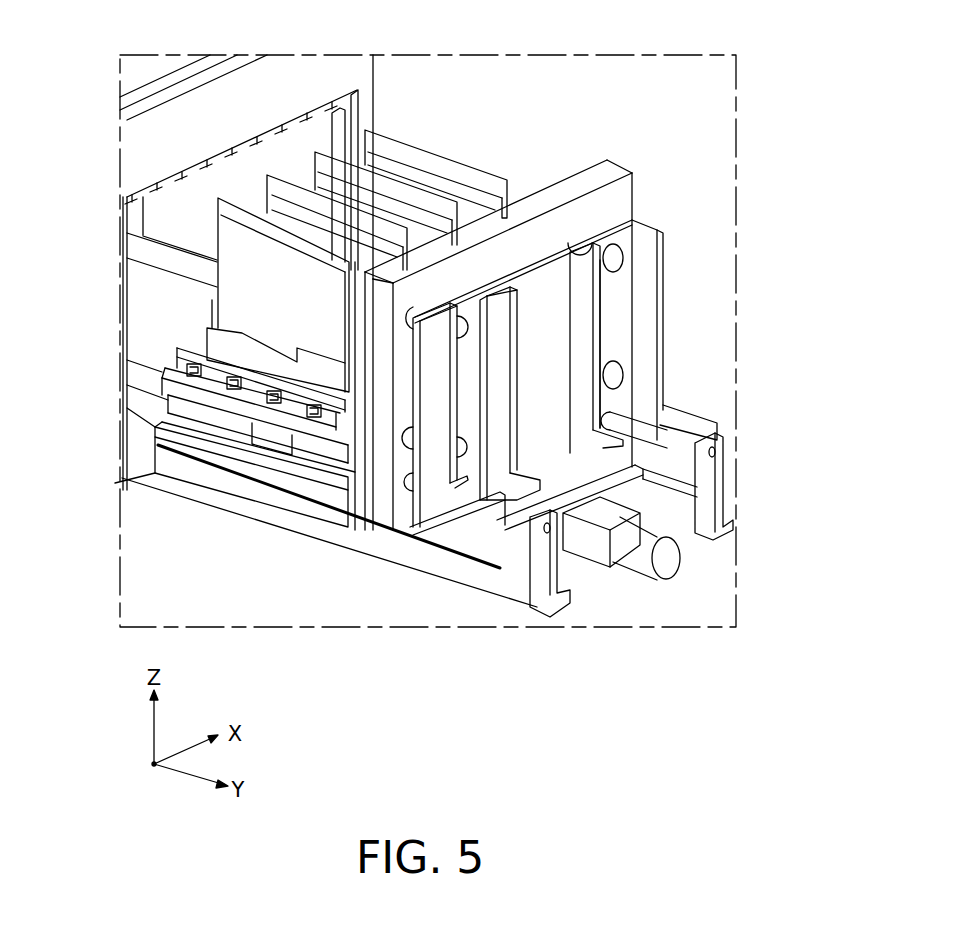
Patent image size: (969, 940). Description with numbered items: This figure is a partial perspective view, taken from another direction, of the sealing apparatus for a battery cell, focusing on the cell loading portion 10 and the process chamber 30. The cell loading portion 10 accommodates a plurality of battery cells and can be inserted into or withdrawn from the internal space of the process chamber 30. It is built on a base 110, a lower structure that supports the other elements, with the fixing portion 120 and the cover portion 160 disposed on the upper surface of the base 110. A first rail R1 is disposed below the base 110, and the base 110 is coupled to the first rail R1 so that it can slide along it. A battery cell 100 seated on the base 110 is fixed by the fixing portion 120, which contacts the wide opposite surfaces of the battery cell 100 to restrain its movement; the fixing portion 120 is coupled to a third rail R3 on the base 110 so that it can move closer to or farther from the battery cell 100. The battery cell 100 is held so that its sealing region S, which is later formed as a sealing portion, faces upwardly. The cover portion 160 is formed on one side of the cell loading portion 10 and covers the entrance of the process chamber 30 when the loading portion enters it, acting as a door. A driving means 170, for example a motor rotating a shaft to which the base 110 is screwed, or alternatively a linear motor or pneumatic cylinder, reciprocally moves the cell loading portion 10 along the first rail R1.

The cell loading portion 10 is at (563, 125).
The process chamber 30 is at (297, 86).
The battery cell 100 is at (462, 150).
The base 110 is at (158, 380).
The fixing portion 120 is at (265, 307).
The cover portion 160 is at (622, 192).
The driving means 170 is at (643, 557).
The sealing region S is at (430, 160).
The first rail R1 is at (280, 440).
The third rail R3 is at (230, 373).